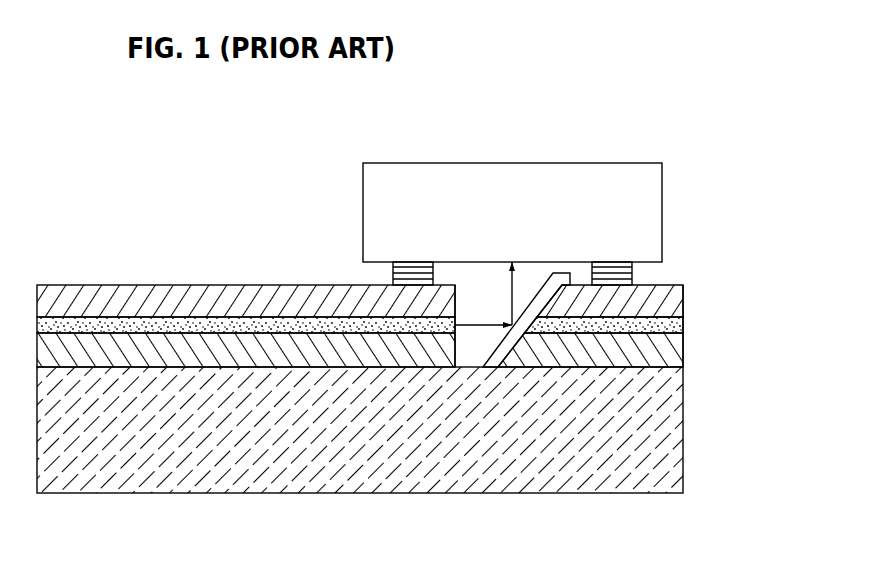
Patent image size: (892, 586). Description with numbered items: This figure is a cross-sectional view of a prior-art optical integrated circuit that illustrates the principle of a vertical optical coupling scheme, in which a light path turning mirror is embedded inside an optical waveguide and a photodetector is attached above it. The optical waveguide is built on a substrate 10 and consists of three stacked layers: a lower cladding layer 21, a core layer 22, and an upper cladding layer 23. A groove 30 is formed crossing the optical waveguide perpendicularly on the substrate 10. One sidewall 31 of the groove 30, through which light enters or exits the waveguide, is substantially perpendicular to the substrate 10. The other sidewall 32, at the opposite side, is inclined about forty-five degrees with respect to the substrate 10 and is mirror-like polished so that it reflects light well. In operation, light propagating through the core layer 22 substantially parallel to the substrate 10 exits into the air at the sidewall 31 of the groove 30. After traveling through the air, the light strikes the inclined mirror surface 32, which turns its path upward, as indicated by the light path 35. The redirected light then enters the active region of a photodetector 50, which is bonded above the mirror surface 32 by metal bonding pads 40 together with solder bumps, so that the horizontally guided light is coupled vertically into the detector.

The substrate 10 is at (668, 445).
The lower cladding layer 21 is at (667, 343).
The core layer 22 is at (665, 327).
The upper cladding layer 23 is at (655, 303).
The groove 30 is at (500, 300).
The sidewall 31 is at (457, 294).
The inclined mirror surface 32 is at (490, 352).
The light path 35 is at (515, 287).
The metal bonding pads 40 is at (378, 276).
The photodetector 50 is at (640, 210).